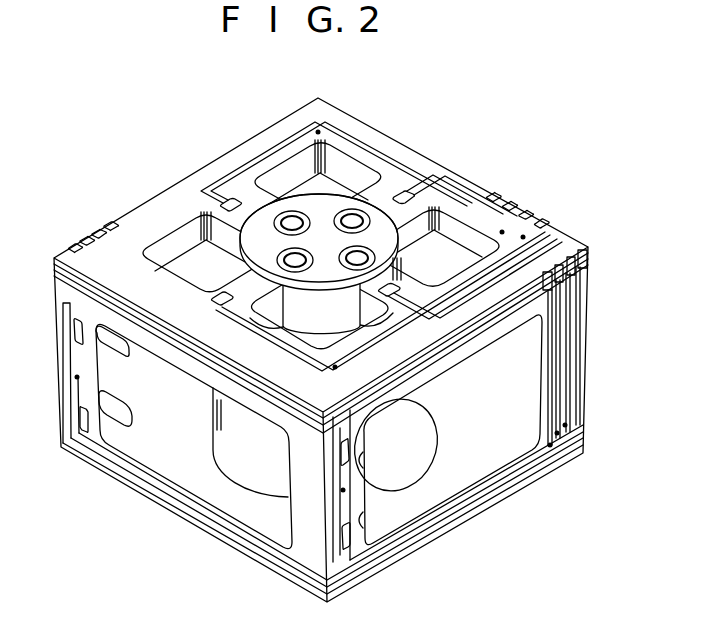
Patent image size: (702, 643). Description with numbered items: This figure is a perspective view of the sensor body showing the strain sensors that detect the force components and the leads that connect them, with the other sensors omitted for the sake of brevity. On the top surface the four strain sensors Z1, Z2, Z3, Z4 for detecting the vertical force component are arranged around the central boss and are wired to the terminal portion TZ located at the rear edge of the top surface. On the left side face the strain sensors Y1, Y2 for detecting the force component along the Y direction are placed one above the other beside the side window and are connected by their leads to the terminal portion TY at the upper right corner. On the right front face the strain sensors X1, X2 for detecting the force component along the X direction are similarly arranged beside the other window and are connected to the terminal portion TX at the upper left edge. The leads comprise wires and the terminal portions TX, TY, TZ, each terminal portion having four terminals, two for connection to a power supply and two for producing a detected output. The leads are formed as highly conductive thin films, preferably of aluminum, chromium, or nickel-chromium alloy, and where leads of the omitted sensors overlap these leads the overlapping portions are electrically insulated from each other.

The terminal portion TX is at (114, 214).
The terminal portion TY is at (539, 262).
The terminal portion TZ is at (554, 236).
The strain sensor Z1 is at (405, 208).
The strain sensor Z2 is at (398, 292).
The strain sensor Z3 is at (222, 309).
The strain sensor Z4 is at (228, 203).
The strain sensor Y1 is at (80, 420).
The strain sensor Y2 is at (74, 331).
The strain sensor X1 is at (349, 534).
The strain sensor X2 is at (348, 450).